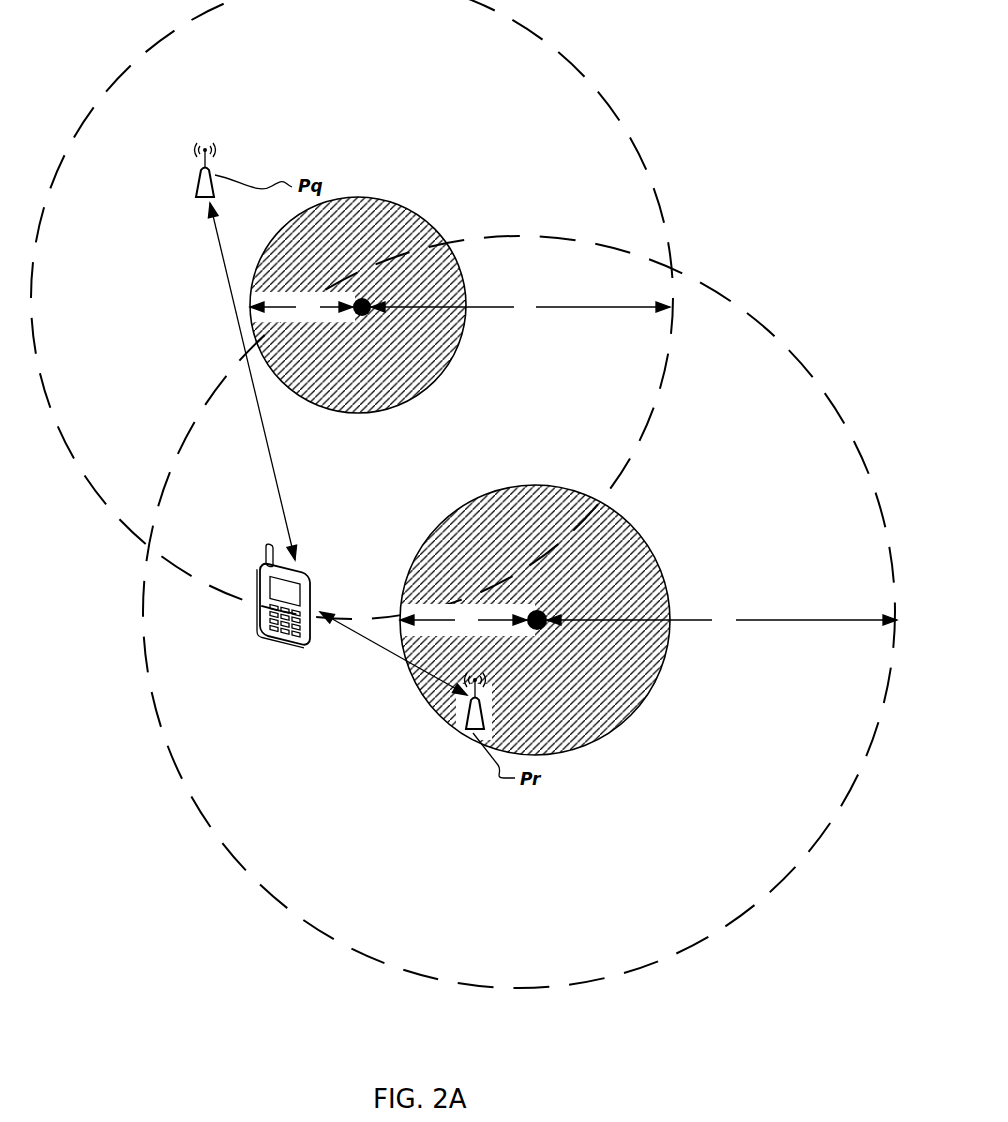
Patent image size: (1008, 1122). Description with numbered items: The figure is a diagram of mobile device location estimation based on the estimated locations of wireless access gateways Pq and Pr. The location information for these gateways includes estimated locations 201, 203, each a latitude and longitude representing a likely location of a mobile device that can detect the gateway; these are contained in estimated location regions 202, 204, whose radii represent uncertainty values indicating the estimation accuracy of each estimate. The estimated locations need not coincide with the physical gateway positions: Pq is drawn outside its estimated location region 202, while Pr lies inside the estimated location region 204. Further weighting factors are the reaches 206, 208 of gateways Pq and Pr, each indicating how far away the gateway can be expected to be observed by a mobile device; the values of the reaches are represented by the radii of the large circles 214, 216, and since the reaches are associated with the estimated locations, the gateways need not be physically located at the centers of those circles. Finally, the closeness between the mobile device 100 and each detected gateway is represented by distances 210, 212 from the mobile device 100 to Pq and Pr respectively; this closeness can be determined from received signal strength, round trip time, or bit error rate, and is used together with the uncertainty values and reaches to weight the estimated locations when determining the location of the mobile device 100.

The mobile device 100 is at (290, 648).
The estimated location 201 is at (368, 313).
The estimated location region 202 is at (407, 195).
The estimated location 203 is at (543, 627).
The estimated location region 204 is at (660, 567).
The reach 206 is at (565, 308).
The reach 208 is at (780, 620).
The distance 210 is at (236, 325).
The distance 212 is at (387, 648).
The circle 214 is at (643, 160).
The circle 216 is at (747, 310).